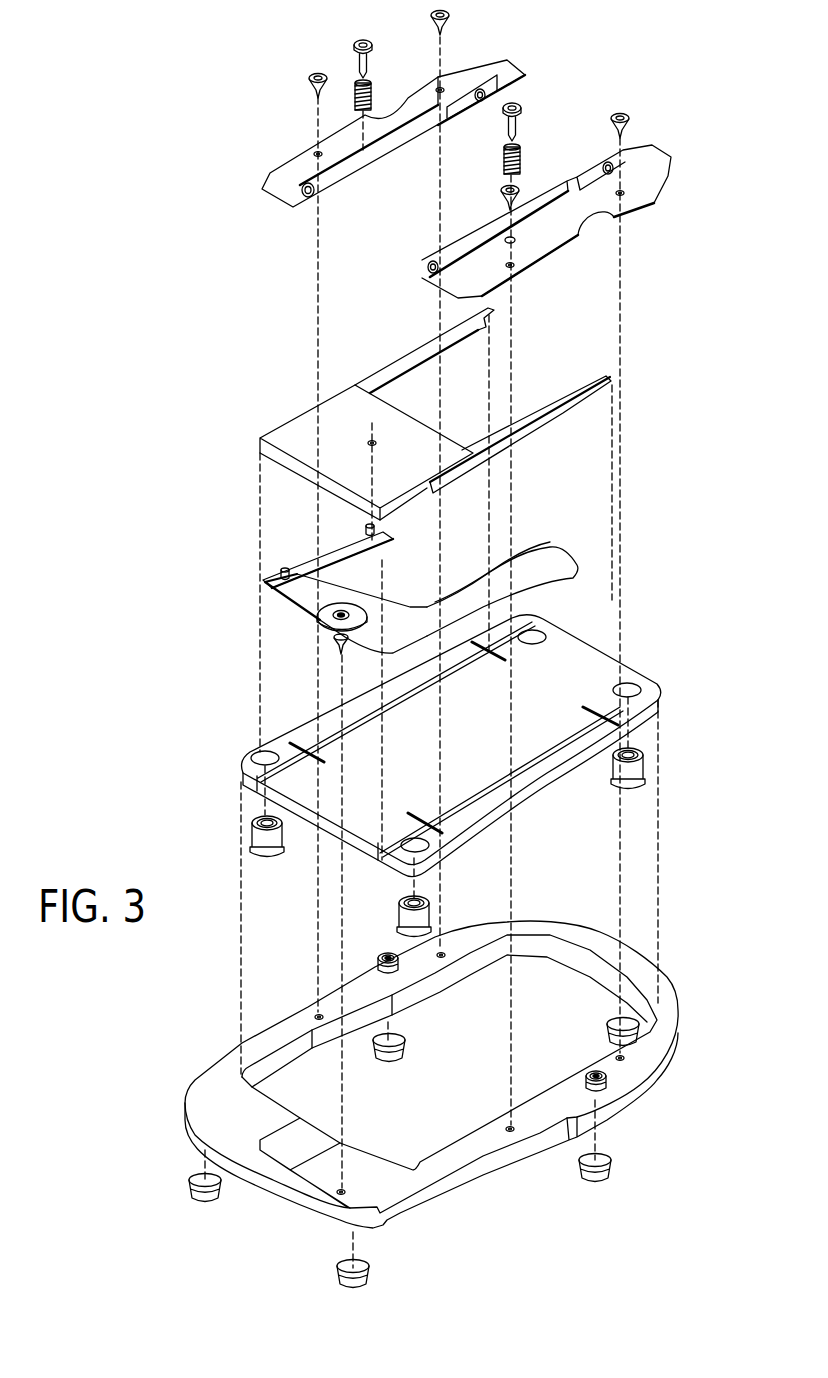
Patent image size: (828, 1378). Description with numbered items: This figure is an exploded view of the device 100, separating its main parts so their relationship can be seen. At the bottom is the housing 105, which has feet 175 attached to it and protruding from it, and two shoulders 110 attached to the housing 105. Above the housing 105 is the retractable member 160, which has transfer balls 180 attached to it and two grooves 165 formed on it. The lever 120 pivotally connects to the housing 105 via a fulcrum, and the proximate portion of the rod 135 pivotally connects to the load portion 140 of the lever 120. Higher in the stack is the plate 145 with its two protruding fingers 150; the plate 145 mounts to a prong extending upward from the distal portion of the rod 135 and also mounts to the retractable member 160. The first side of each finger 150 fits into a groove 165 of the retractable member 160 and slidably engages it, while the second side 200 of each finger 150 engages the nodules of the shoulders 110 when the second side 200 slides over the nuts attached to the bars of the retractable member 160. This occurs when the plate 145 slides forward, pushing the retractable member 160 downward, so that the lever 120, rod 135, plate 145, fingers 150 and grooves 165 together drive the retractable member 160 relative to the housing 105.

The device 100 is at (118, 243).
The housing 105 is at (670, 1000).
The shoulders 110 is at (285, 167).
The lever 120 is at (548, 557).
The rod 135 is at (307, 565).
The load portion 140 is at (293, 595).
The plate 145 is at (298, 425).
The protruding fingers 150 is at (400, 362).
The retractable member 160 is at (628, 673).
The grooves 165 is at (428, 682).
The feet 175 is at (190, 1192).
The transfer balls 180 is at (250, 838).
The second side 200 is at (587, 383).